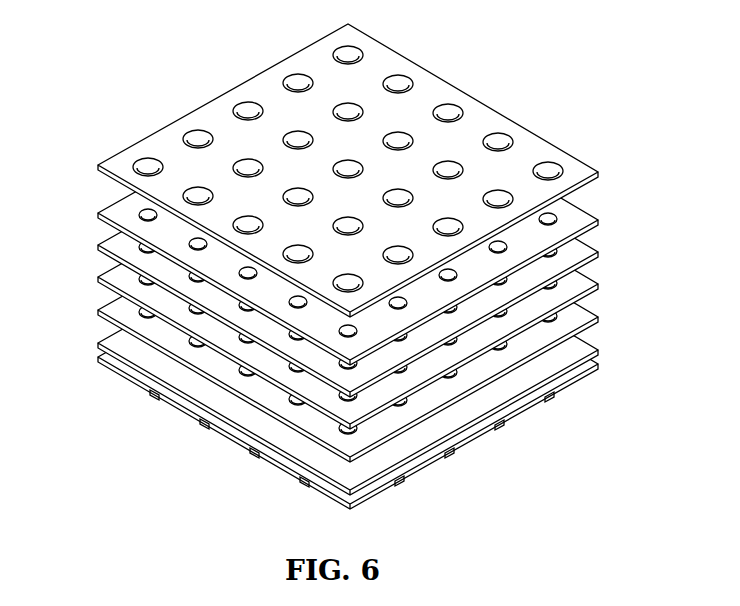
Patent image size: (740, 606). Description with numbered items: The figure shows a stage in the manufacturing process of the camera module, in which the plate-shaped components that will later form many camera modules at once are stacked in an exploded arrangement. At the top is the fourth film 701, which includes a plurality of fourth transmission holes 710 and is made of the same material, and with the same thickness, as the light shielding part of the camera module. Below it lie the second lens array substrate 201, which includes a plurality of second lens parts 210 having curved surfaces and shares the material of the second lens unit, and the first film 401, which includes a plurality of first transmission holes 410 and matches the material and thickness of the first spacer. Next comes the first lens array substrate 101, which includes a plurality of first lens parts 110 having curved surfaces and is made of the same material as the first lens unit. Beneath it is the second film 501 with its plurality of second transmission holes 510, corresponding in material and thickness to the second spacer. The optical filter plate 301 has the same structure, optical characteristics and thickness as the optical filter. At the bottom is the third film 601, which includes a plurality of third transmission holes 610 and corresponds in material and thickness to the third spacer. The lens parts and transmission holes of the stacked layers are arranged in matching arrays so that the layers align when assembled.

The first lens array substrate 101 is at (348, 282).
The first lens parts 110 is at (140, 281).
The second lens array substrate 201 is at (348, 218).
The second lens parts 210 is at (138, 213).
The optical filter plate 301 is at (348, 348).
The first film 401 is at (348, 250).
The first transmission holes 410 is at (140, 249).
The second film 501 is at (348, 315).
The second transmission holes 510 is at (140, 314).
The third film 601 is at (348, 362).
The third transmission holes 610 is at (531, 409).
The fourth film 701 is at (577, 161).
The fourth transmission holes 710 is at (398, 76).